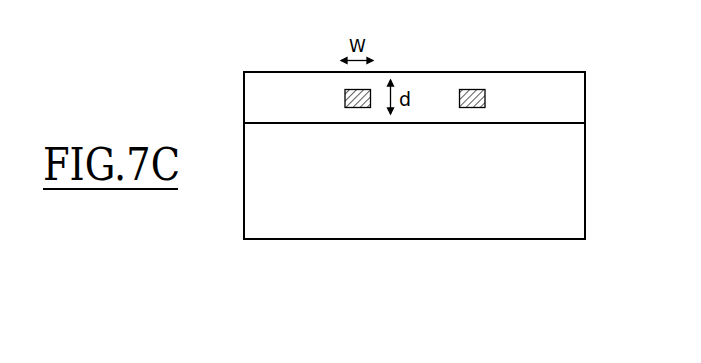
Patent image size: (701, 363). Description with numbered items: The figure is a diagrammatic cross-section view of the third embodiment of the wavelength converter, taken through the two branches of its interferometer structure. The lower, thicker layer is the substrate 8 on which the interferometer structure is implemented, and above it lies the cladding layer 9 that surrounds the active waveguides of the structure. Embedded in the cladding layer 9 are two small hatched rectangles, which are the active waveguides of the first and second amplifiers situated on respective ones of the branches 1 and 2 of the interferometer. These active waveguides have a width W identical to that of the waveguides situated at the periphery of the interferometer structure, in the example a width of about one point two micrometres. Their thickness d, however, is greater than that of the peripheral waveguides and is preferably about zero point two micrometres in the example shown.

The branch of the interferometer 1 is at (473, 92).
The branch of the interferometer 2 is at (343, 97).
The substrate 8 is at (568, 182).
The cladding layer 9 is at (570, 103).